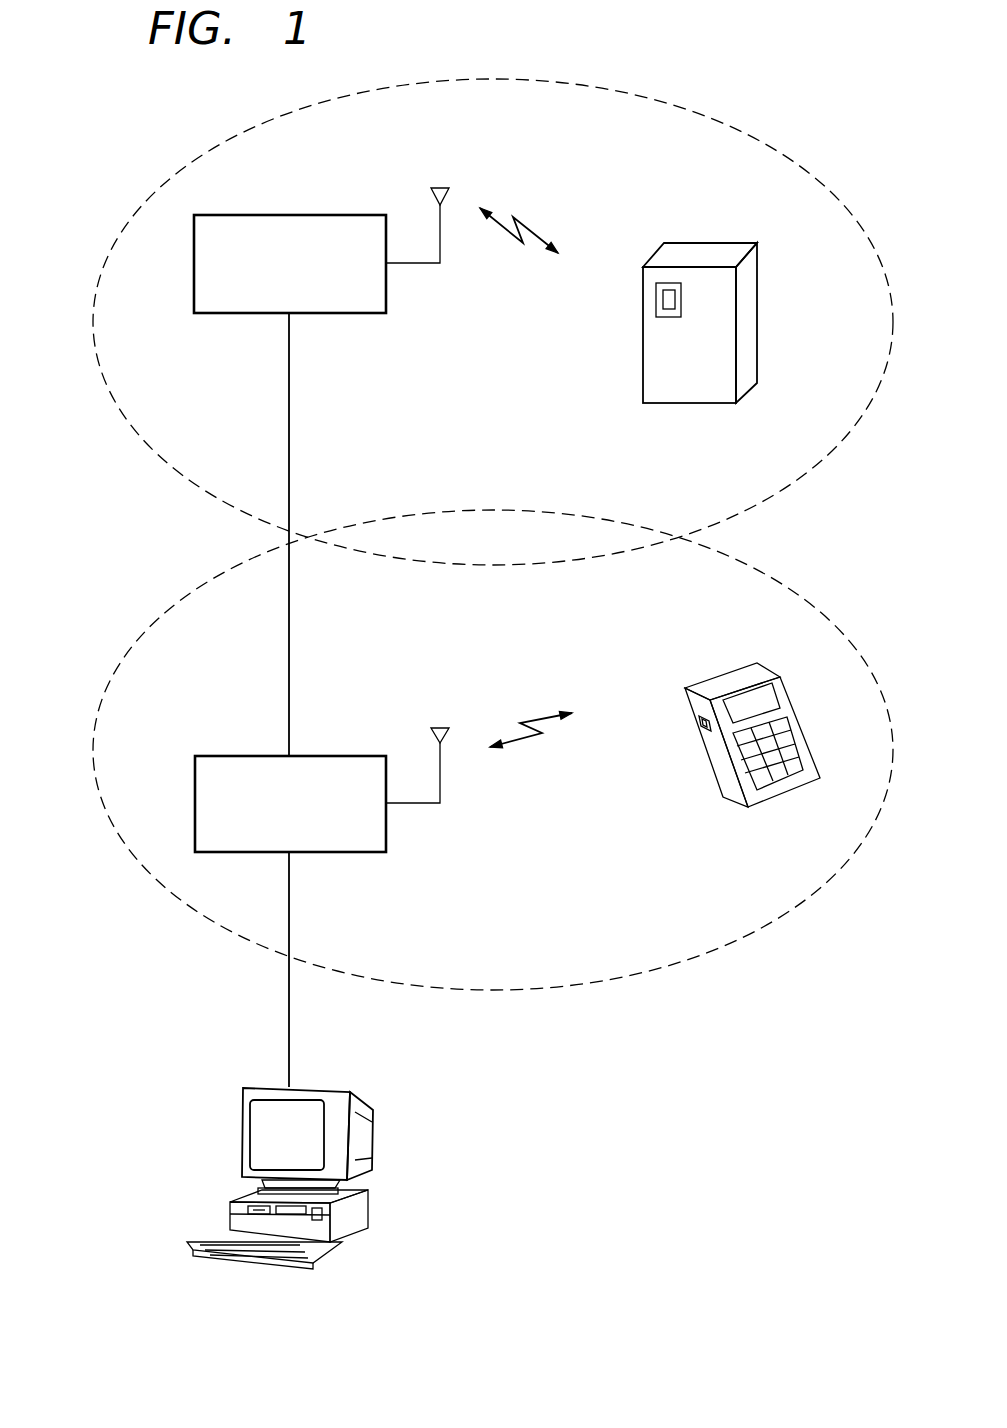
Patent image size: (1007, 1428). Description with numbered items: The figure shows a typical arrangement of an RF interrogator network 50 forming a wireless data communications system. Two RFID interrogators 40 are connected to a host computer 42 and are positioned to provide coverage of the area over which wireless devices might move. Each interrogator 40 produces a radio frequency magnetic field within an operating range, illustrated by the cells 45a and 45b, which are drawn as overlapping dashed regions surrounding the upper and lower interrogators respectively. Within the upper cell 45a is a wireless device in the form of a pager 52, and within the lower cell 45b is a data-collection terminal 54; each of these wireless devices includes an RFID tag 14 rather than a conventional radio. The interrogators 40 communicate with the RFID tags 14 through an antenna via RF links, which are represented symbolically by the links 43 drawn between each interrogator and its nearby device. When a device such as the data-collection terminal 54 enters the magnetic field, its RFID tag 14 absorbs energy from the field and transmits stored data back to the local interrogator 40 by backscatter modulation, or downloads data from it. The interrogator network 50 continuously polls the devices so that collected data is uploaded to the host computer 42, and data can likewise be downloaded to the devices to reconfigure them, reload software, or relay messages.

The interrogator network 50 is at (140, 150).
The cell 45a is at (787, 157).
The cell 45b is at (857, 647).
The RFID interrogator 40 is at (363, 314).
The RF link 43 is at (530, 228).
The pager 52 is at (757, 322).
The RFID tag 14 is at (660, 299).
The data-collection terminal 54 is at (800, 712).
The host computer 42 is at (243, 1135).